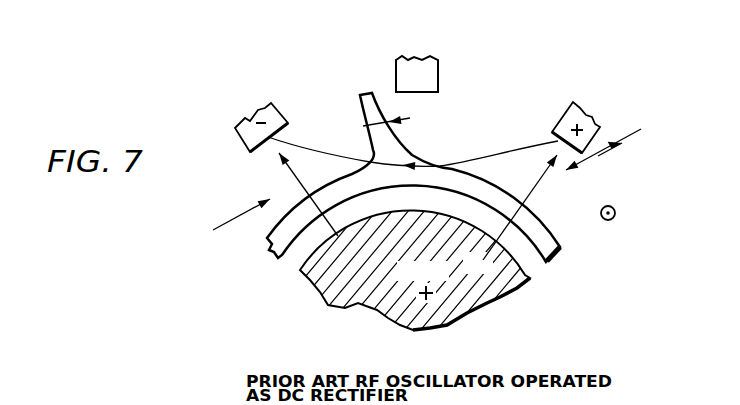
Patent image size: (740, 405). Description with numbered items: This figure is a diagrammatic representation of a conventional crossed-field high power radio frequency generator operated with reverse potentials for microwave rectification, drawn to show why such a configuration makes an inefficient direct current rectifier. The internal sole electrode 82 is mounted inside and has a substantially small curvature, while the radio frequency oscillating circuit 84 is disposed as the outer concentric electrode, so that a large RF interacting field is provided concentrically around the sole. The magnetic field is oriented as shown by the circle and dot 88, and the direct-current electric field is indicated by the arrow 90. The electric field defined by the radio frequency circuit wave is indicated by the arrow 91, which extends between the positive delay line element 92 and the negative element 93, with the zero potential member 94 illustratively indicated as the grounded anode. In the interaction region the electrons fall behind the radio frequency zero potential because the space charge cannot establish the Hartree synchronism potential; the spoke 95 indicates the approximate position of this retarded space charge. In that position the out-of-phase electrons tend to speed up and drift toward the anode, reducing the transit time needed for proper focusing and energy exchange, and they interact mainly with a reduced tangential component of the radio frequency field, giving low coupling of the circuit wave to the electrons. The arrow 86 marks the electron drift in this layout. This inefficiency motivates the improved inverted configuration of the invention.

The sole electrode 82 is at (490, 272).
The radio frequency oscillating circuit 84 is at (614, 144).
The electron flow arrow 86 is at (226, 225).
The circle and dot 88 is at (608, 205).
The arrow 90 is at (540, 196).
The arrow 91 is at (445, 163).
The positive delay line element 92 is at (592, 113).
The negative element 93 is at (283, 115).
The zero potential member 94 is at (427, 58).
The spoke 95 is at (362, 114).